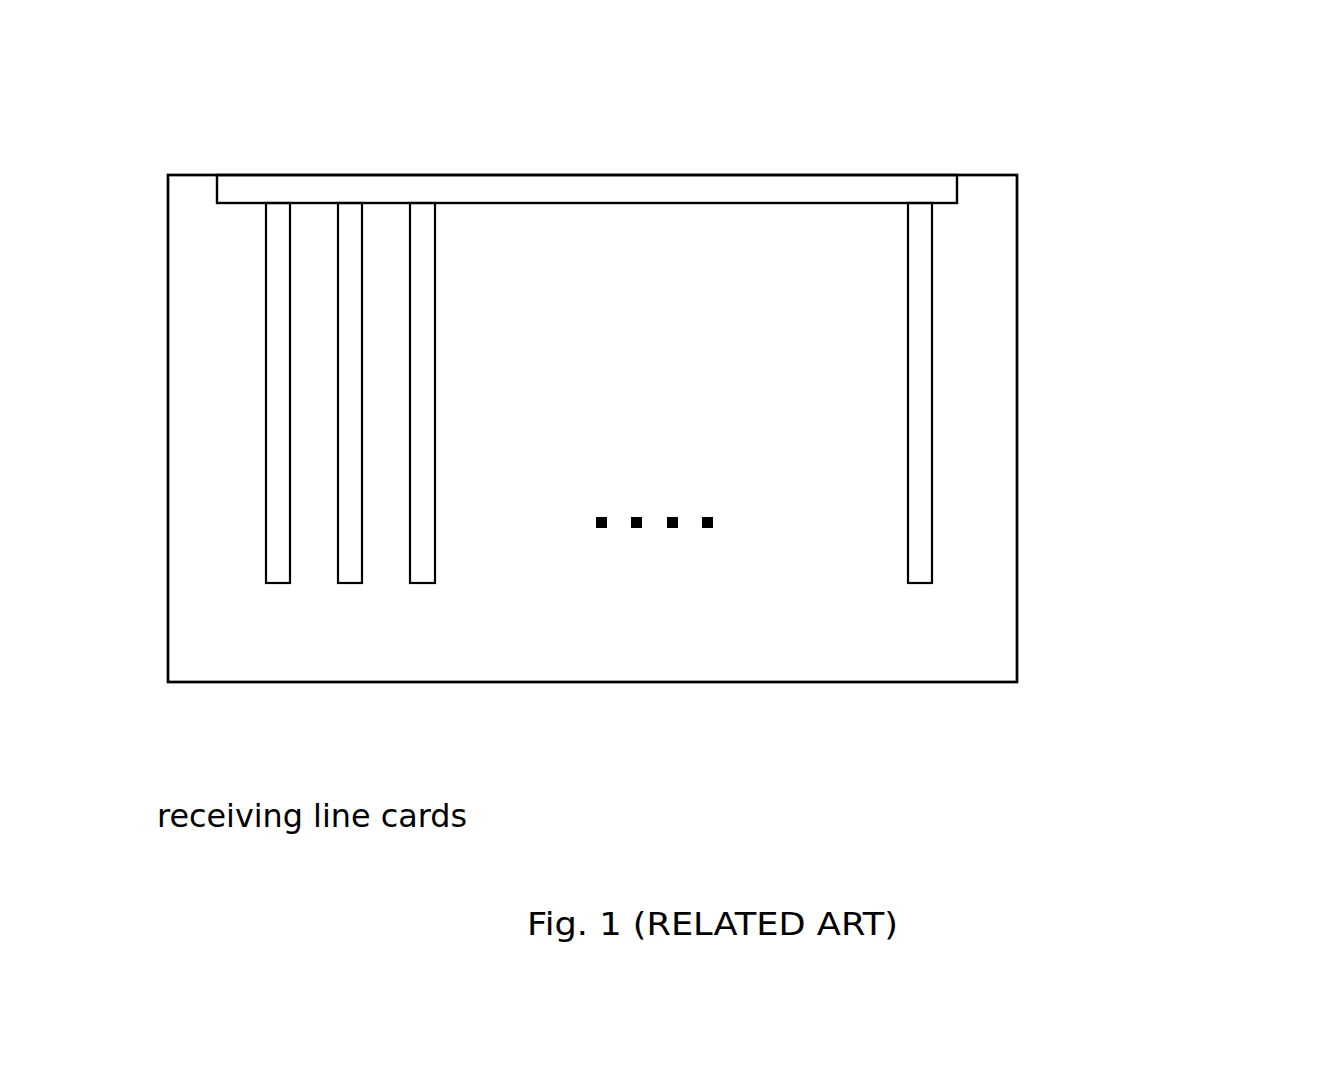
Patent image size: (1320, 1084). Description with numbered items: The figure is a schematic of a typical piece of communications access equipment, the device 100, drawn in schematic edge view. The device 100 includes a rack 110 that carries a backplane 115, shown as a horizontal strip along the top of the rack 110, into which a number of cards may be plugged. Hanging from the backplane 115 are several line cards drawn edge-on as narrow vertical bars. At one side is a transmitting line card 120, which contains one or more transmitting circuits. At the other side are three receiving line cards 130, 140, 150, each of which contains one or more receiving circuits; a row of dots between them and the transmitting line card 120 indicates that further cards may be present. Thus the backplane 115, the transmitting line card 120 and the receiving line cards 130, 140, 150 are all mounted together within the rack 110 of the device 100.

The device 100 is at (254, 125).
The rack 110 is at (1017, 241).
The backplane 115 is at (703, 141).
The transmitting line card 120 is at (931, 500).
The receiving line card 130 is at (277, 612).
The receiving line card 140 is at (353, 607).
The receiving line card 150 is at (425, 595).